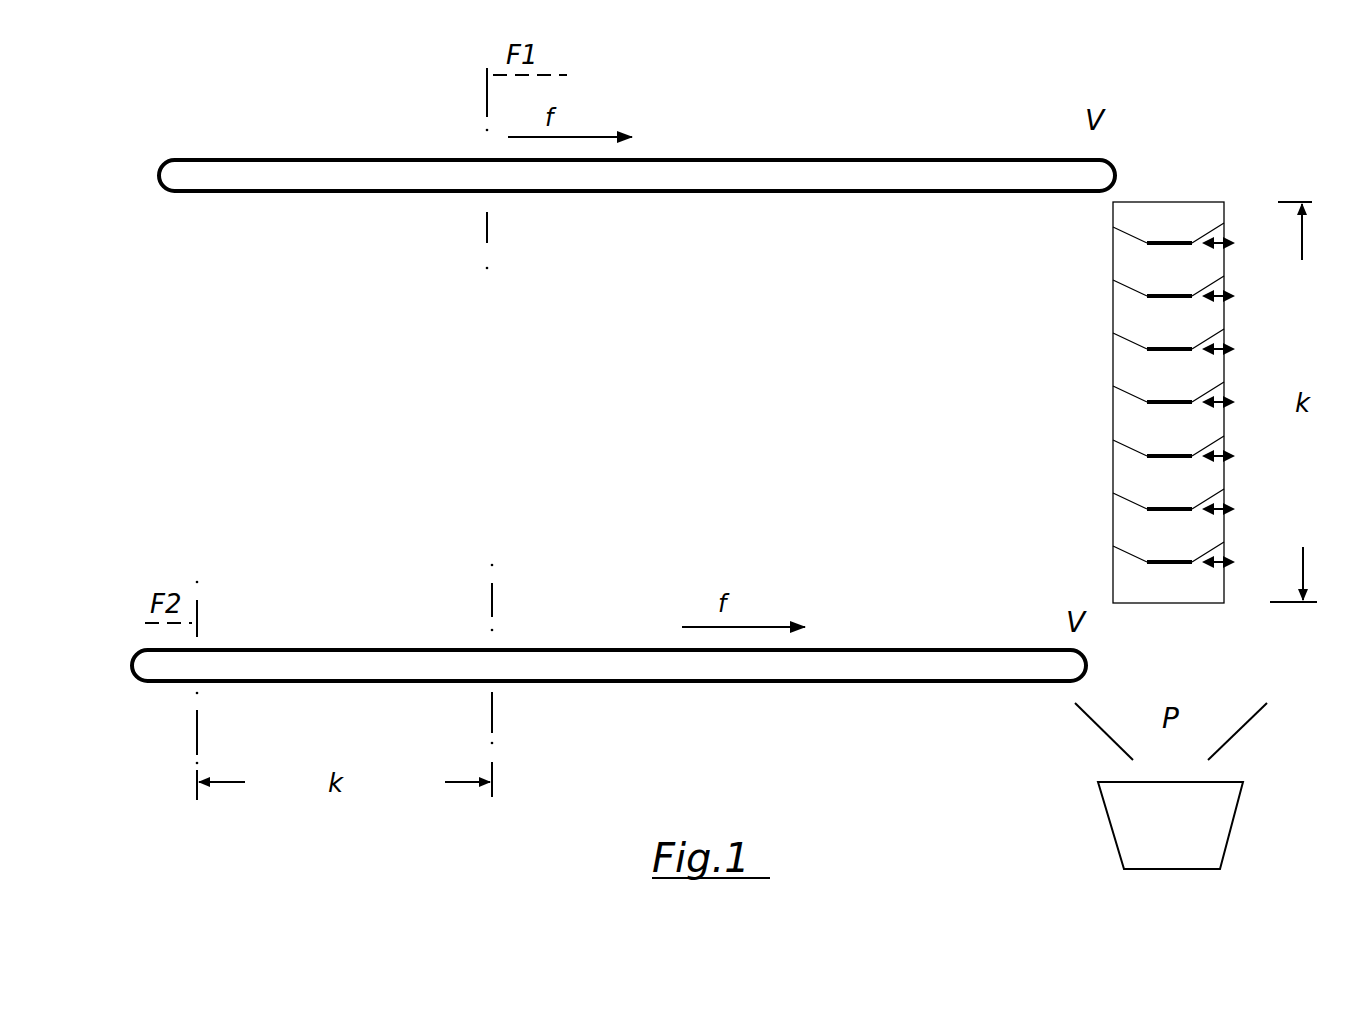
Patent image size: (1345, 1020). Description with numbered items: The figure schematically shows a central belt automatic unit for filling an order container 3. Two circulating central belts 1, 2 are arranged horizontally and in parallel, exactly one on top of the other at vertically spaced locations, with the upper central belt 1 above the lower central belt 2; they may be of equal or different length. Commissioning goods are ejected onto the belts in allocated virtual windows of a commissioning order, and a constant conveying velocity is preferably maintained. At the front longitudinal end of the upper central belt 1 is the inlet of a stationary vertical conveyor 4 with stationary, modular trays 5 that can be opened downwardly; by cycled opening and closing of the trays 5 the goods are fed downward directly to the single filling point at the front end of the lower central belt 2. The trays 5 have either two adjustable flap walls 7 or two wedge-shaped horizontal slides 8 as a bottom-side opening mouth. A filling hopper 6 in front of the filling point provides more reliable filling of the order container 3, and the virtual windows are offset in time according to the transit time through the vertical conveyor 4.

The upper central belt 1 is at (812, 153).
The lower central belt 2 is at (802, 685).
The order container 3 is at (1108, 822).
The vertical conveyor 4 is at (1113, 418).
The trays 5 is at (1135, 233).
The filling hopper 6 is at (1247, 723).
The adjustable flap walls 7 is at (1160, 563).
The wedge-shaped horizontal slides 8 is at (1218, 402).